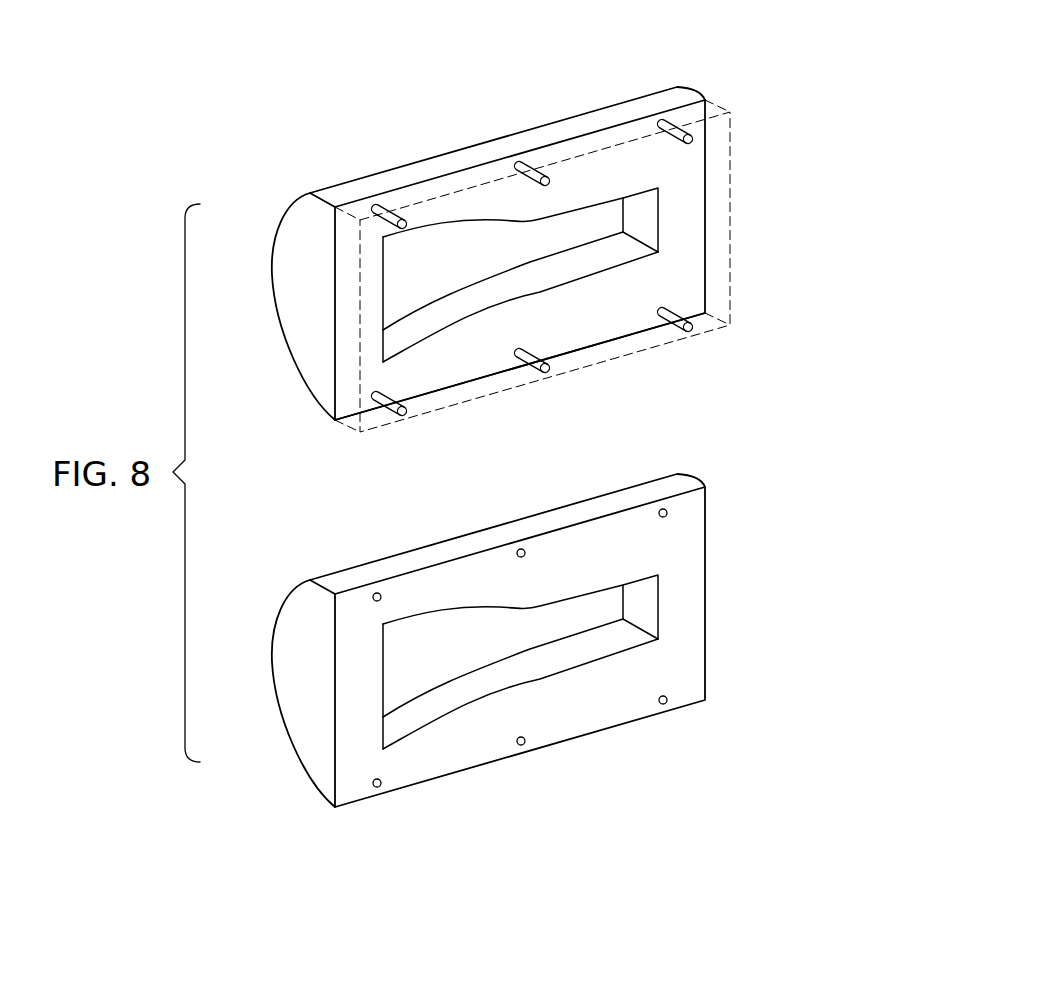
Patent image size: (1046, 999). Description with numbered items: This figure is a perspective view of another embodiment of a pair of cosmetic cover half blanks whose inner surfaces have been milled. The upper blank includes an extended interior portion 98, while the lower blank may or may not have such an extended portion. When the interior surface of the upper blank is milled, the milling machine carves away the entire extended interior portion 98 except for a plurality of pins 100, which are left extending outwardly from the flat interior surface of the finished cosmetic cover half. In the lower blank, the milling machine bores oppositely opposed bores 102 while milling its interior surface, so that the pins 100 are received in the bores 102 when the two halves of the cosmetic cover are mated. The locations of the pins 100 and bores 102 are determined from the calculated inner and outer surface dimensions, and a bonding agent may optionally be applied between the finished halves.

The pins 100 is at (387, 207).
The bores 102 is at (377, 593).
The extended interior portion 98 is at (340, 424).